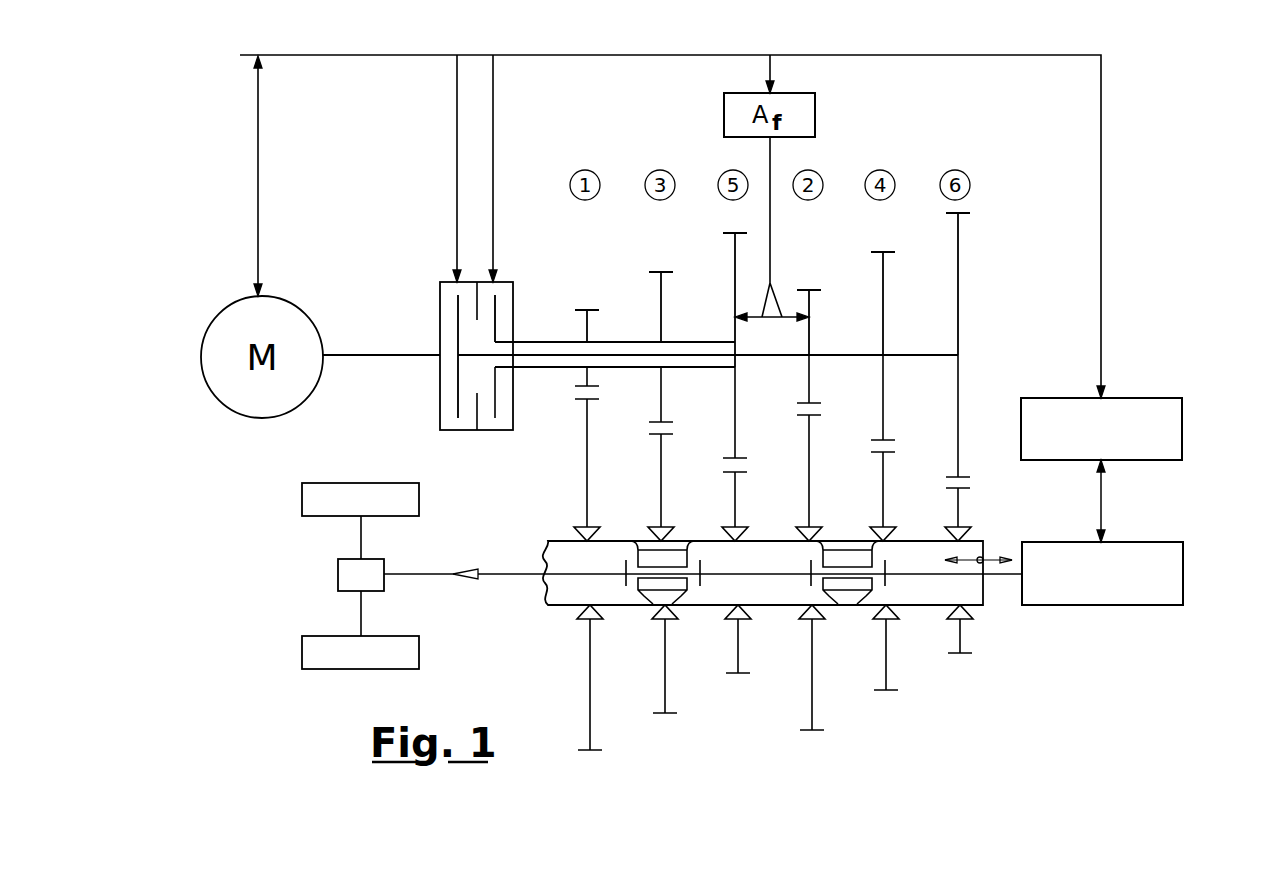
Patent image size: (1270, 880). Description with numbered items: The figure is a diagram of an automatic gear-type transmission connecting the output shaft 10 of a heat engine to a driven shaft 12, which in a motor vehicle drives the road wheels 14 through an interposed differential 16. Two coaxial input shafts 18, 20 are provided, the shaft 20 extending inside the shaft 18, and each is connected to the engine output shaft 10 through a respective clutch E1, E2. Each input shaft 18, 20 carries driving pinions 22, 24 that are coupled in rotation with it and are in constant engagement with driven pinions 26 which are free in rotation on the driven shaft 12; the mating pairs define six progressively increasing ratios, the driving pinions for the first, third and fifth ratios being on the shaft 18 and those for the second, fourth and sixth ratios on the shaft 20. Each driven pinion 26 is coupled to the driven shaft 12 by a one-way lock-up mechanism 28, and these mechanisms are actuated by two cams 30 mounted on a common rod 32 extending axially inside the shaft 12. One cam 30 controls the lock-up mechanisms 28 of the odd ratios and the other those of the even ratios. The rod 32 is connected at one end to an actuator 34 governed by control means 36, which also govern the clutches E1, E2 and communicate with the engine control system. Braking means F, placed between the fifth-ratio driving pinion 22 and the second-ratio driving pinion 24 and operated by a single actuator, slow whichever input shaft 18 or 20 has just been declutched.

The output shaft 10 is at (398, 355).
The driven shaft 12 is at (545, 541).
The wheels 14 is at (304, 498).
The differential 16 is at (338, 565).
The first input shaft 18 is at (544, 342).
The second input shaft 20 is at (912, 352).
The driving pinions 22 is at (588, 332).
The driving pinions 24 is at (810, 341).
The driven pinions 26 is at (588, 424).
The one-way lock-up mechanisms 28 is at (600, 532).
The cams 30 is at (637, 548).
The common rod 32 is at (730, 577).
The actuator 34 is at (1184, 568).
The control means 36 is at (1152, 398).
The clutch E1 is at (446, 278).
The clutch E2 is at (504, 278).
The braking means F is at (778, 257).